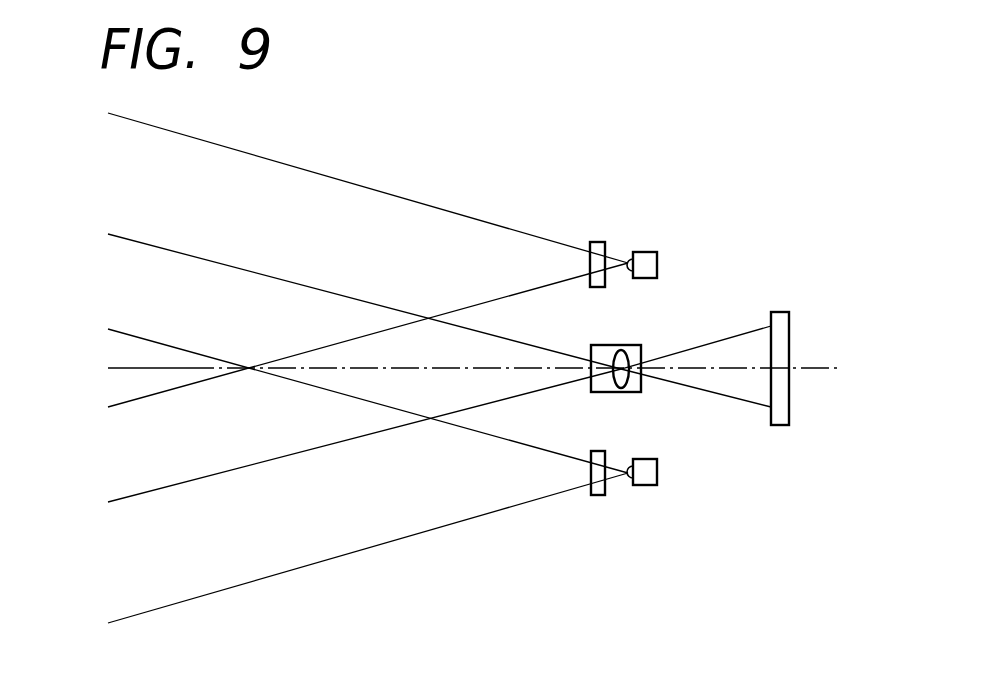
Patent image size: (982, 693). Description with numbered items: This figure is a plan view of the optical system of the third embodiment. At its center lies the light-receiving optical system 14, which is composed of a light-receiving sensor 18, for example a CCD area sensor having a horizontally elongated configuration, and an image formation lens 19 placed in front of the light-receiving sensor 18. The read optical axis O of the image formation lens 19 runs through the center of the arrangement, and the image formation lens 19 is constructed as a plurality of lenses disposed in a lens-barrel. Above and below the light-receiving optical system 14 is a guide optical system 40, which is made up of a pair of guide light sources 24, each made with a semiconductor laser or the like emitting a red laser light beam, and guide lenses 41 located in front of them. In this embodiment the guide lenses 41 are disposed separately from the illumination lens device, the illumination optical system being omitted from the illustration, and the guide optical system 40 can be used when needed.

The read optical axis O is at (118, 368).
The light-receiving optical system 14 is at (738, 287).
The light-receiving sensor 18 is at (790, 325).
The image formation lens 19 is at (620, 345).
The guide light source 24 is at (650, 252).
The guide optical system 40 is at (574, 215).
The guide lens 41 is at (600, 242).